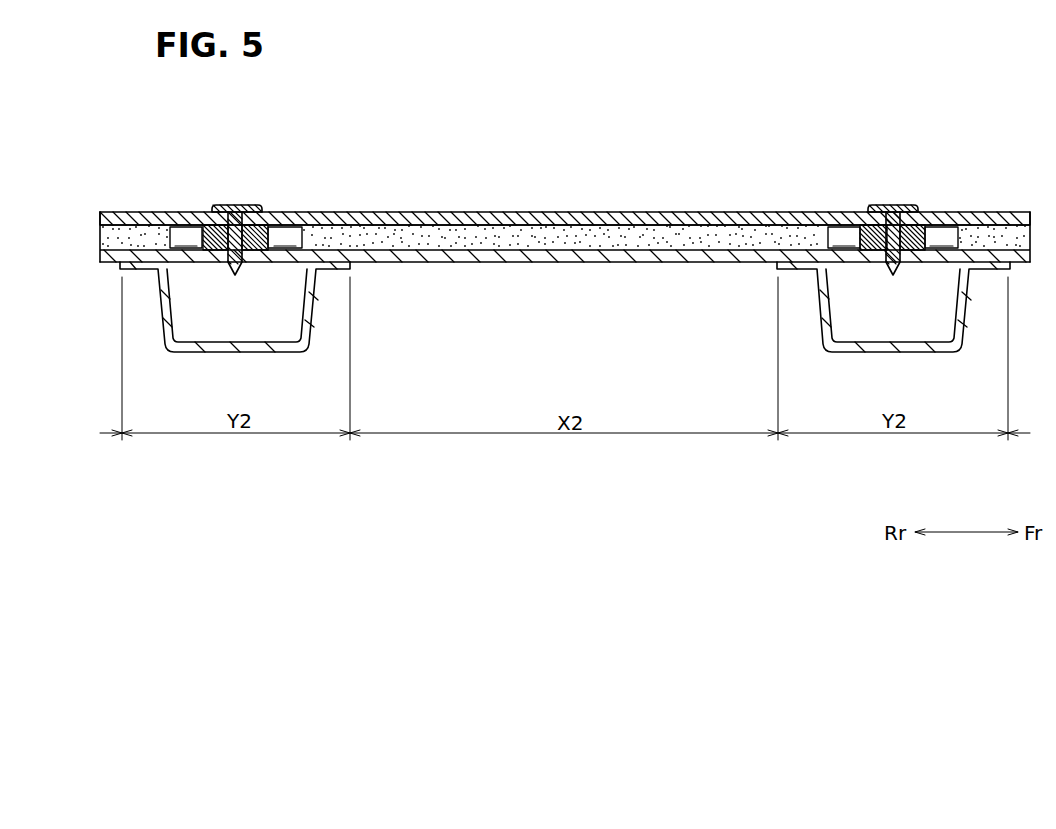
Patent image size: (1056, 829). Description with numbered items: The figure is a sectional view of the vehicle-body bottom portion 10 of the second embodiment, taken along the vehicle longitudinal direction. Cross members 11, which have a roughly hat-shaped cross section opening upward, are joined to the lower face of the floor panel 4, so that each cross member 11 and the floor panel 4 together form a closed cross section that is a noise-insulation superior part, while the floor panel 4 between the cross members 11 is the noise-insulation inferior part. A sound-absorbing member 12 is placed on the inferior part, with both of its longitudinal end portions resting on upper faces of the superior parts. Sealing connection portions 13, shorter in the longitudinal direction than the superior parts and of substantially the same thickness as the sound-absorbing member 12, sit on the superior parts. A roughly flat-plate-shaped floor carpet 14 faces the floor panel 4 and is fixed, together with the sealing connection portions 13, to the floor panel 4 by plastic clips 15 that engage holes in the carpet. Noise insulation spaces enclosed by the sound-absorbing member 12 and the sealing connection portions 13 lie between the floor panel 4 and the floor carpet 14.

The floor panel 4 is at (518, 278).
The vehicle-body bottom portion 10 is at (565, 331).
The cross member 11 is at (852, 367).
The sound-absorbing member 12 is at (140, 240).
The sealing connection portion 13 is at (264, 230).
The floor carpet 14 is at (589, 197).
The plastic clip 15 is at (246, 200).